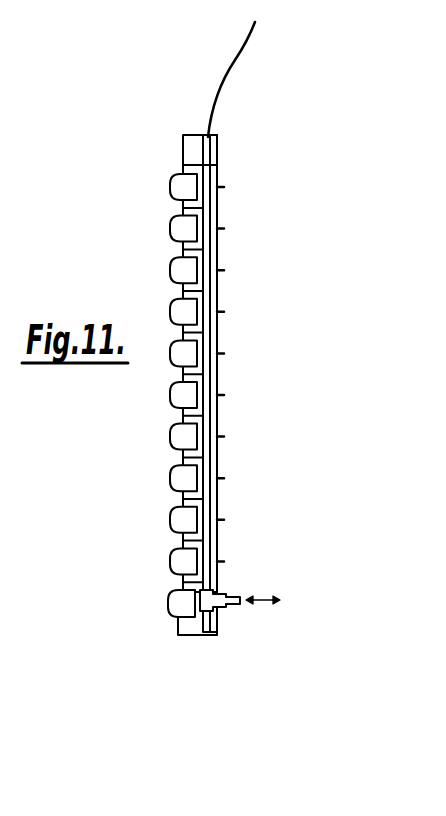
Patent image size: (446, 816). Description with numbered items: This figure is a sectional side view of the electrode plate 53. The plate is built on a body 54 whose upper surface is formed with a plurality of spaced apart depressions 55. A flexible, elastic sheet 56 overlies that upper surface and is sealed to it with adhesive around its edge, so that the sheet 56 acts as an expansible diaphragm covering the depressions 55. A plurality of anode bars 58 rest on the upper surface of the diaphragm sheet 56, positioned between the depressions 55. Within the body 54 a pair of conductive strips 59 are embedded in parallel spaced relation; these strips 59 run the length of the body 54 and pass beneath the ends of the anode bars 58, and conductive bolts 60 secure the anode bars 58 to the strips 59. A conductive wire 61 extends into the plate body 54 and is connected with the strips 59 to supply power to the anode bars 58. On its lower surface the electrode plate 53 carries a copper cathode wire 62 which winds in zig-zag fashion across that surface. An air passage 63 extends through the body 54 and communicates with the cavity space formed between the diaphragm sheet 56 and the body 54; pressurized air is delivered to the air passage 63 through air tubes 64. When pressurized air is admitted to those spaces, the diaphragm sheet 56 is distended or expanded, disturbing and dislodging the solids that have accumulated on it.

The electrode plate 53 is at (243, 268).
The body 54 is at (194, 150).
The depressions 55 is at (206, 182).
The flexible, elastic sheet 56 is at (168, 185).
The anode bars 58 is at (176, 288).
The conductive strips 59 is at (209, 386).
The conductive bolts 60 is at (198, 414).
The conductive wire 61 is at (248, 46).
The copper cathode wire 62 is at (218, 479).
The air passage 63 is at (212, 602).
The air tubes 64 is at (232, 598).